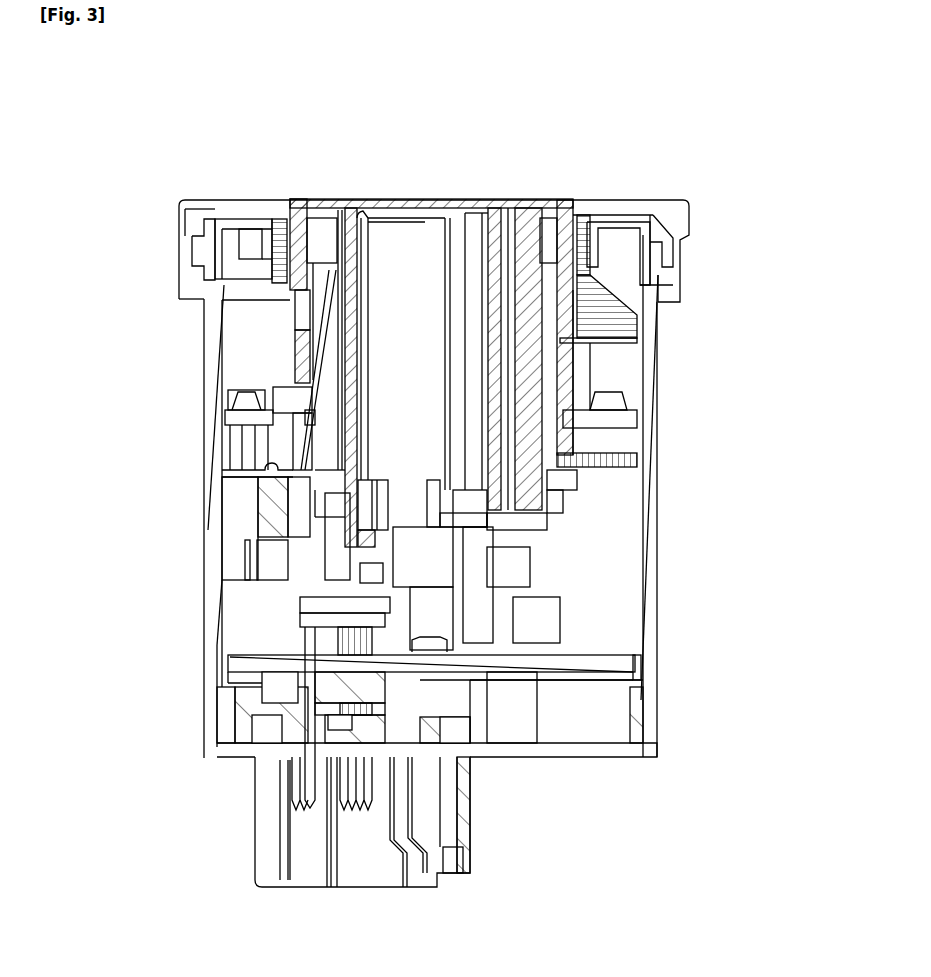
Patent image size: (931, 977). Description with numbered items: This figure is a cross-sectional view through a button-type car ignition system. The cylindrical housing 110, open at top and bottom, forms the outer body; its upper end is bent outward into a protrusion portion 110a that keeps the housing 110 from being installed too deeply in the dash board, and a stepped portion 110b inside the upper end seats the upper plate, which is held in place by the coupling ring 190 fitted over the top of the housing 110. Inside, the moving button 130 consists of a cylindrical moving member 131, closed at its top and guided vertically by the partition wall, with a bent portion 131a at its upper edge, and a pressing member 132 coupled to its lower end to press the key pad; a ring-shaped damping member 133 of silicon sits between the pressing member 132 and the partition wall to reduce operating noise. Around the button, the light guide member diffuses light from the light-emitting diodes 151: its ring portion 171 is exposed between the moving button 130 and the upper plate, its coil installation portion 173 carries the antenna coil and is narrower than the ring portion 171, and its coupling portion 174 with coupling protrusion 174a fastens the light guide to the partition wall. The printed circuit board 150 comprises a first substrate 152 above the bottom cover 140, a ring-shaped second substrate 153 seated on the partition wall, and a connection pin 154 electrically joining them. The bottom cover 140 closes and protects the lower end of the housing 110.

The housing 110 is at (657, 482).
The protrusion portion 110a is at (672, 310).
The stepped portion 110b is at (650, 275).
The moving button 130 is at (544, 367).
The moving member 131 is at (533, 475).
The bent portion 131a is at (300, 242).
The pressing member 132 is at (555, 560).
The damping member 133 is at (455, 503).
The bottom cover 140 is at (560, 750).
The printed circuit board 150 is at (345, 599).
The light-emitting diodes 151 is at (428, 635).
The first substrate 152 is at (380, 633).
The second substrate 153 is at (255, 413).
The connection pin 154 is at (268, 558).
The ring portion 171 is at (353, 503).
The coil installation portion 173 is at (190, 239).
The coupling portion 174 is at (288, 397).
The coupling protrusion 174a is at (287, 442).
The coupling ring 190 is at (680, 198).